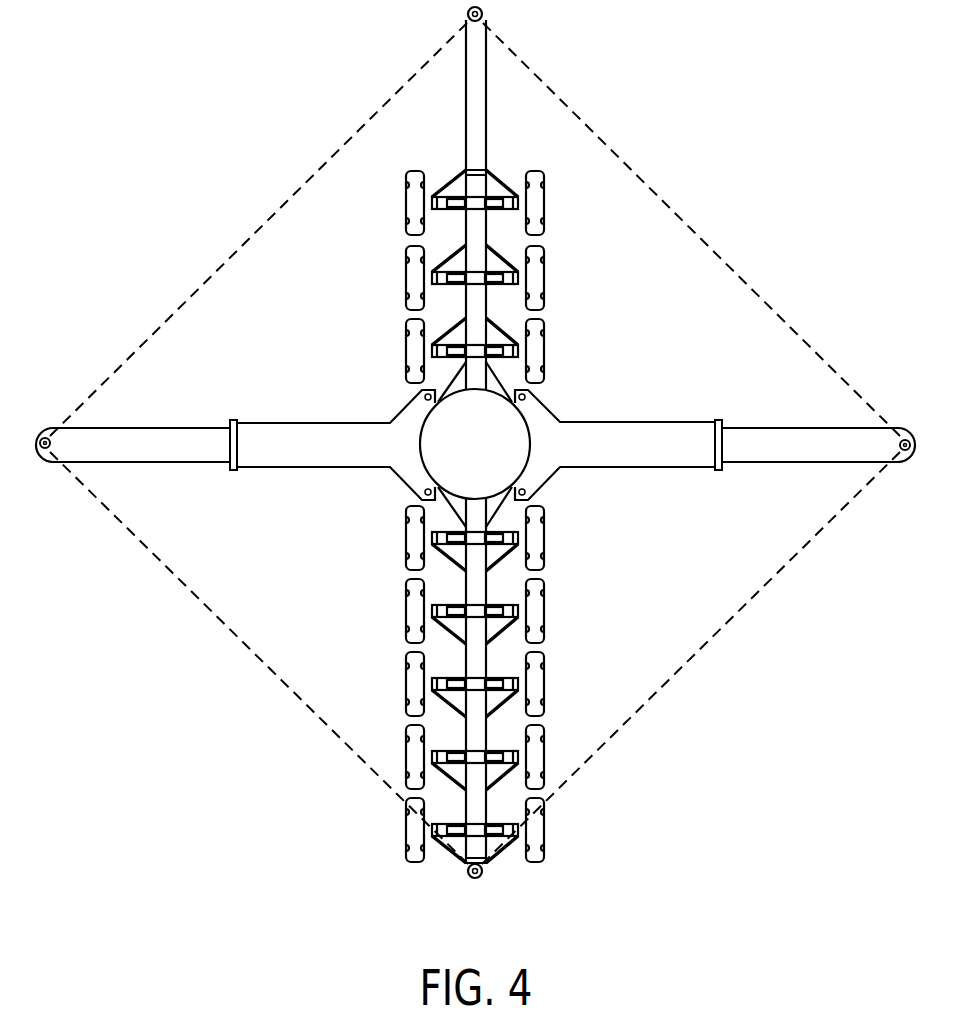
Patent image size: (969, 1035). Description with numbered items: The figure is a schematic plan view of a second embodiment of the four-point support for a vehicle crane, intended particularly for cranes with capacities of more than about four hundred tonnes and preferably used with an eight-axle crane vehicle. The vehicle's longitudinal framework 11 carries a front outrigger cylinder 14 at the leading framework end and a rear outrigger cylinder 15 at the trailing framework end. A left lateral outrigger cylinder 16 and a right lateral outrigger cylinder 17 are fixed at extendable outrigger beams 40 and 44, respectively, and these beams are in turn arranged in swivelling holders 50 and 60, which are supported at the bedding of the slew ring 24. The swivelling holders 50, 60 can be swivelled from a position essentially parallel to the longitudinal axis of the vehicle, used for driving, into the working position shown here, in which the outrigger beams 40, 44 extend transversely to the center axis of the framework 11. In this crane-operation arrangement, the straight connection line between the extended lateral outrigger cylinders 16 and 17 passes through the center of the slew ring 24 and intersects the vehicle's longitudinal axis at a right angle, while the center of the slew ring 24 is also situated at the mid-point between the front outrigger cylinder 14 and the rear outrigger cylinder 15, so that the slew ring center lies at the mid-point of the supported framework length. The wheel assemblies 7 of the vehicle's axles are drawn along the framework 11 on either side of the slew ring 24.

The wheel assembly 7 is at (408, 633).
The framework 11 is at (477, 108).
The outrigger cylinder (front) 14 is at (470, 18).
The outrigger cylinder (rear) 15 is at (478, 876).
The left lateral outrigger cylinder 16 is at (48, 437).
The right lateral outrigger cylinder 17 is at (903, 452).
The slew ring 24 is at (497, 390).
The outrigger beam (left) 40 is at (147, 437).
The outrigger beam (right) 44 is at (790, 453).
The swivelling holder 50 is at (300, 449).
The swivelling holder 60 is at (632, 437).